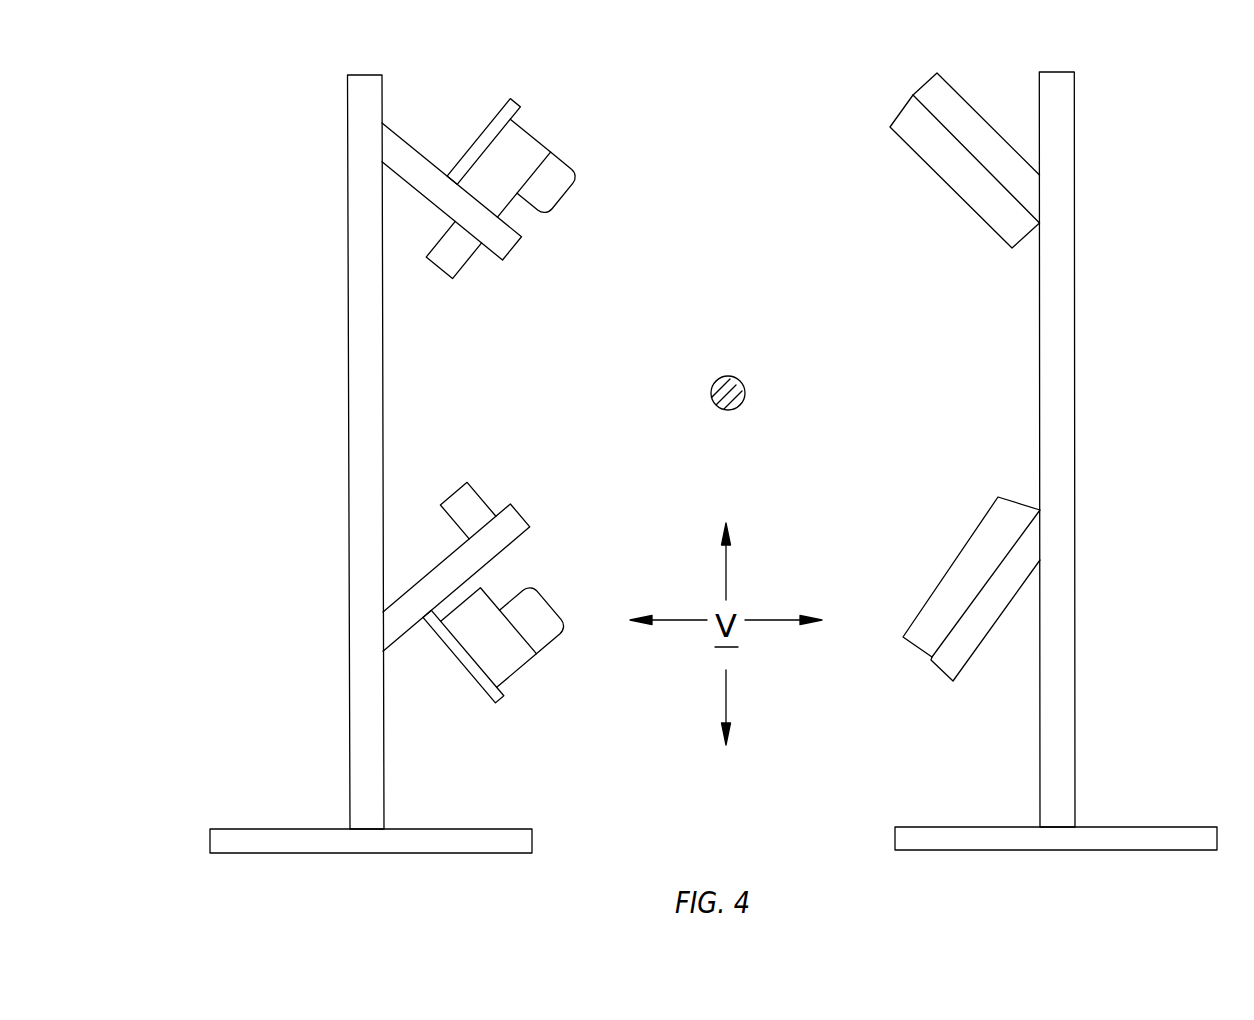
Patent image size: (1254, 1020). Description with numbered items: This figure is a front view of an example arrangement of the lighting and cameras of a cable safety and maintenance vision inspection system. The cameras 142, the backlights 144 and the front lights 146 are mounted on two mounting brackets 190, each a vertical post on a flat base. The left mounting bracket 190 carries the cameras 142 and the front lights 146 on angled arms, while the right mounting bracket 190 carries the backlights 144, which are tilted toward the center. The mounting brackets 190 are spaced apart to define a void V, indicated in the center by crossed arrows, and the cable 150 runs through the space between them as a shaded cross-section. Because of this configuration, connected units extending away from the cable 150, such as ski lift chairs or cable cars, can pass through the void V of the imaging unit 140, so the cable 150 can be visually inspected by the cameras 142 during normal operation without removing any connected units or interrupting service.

The imaging unit 140 is at (1117, 167).
The cameras 142 is at (530, 153).
The backlights 144 is at (957, 167).
The front lights 146 is at (452, 257).
The cable 150 is at (745, 393).
The mounting brackets 190 is at (344, 740).